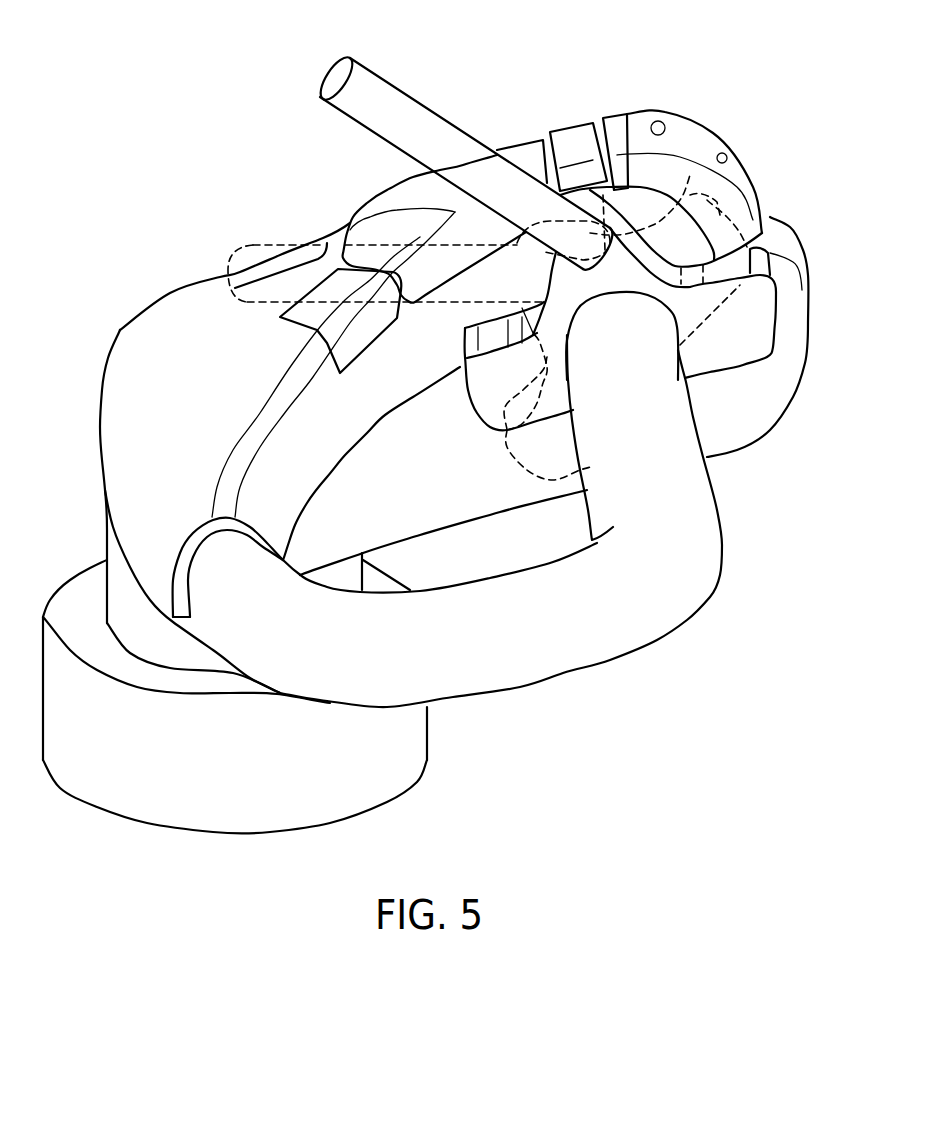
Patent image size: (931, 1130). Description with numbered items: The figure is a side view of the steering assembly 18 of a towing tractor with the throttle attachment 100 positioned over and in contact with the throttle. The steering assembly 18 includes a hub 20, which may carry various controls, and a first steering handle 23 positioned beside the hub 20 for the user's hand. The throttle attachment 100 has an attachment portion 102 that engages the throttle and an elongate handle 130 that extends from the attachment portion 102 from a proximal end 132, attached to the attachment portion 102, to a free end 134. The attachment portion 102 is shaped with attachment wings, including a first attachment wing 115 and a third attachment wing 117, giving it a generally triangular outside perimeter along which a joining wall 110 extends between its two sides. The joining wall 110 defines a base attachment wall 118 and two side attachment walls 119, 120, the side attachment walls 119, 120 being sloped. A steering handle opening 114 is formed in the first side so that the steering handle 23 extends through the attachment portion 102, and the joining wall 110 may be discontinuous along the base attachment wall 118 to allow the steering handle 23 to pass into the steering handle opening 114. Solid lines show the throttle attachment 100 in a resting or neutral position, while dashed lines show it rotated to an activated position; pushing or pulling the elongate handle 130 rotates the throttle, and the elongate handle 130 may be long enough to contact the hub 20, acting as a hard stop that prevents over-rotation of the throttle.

The steering assembly 18 is at (197, 233).
The hub 20 is at (120, 330).
The first steering handle 23 is at (527, 688).
The throttle attachment 100 is at (593, 103).
The attachment portion 102 is at (778, 238).
The joining wall 110 is at (703, 287).
The steering handle opening 114 is at (673, 327).
The first attachment wing 115 is at (776, 322).
The third attachment wing 117 is at (482, 350).
The base attachment wall 118 is at (717, 380).
The side attachment wall 119 is at (680, 278).
The side attachment wall 120 is at (533, 308).
The elongate handle 130 is at (390, 73).
The proximal end 132 is at (584, 271).
The free end 134 is at (349, 58).